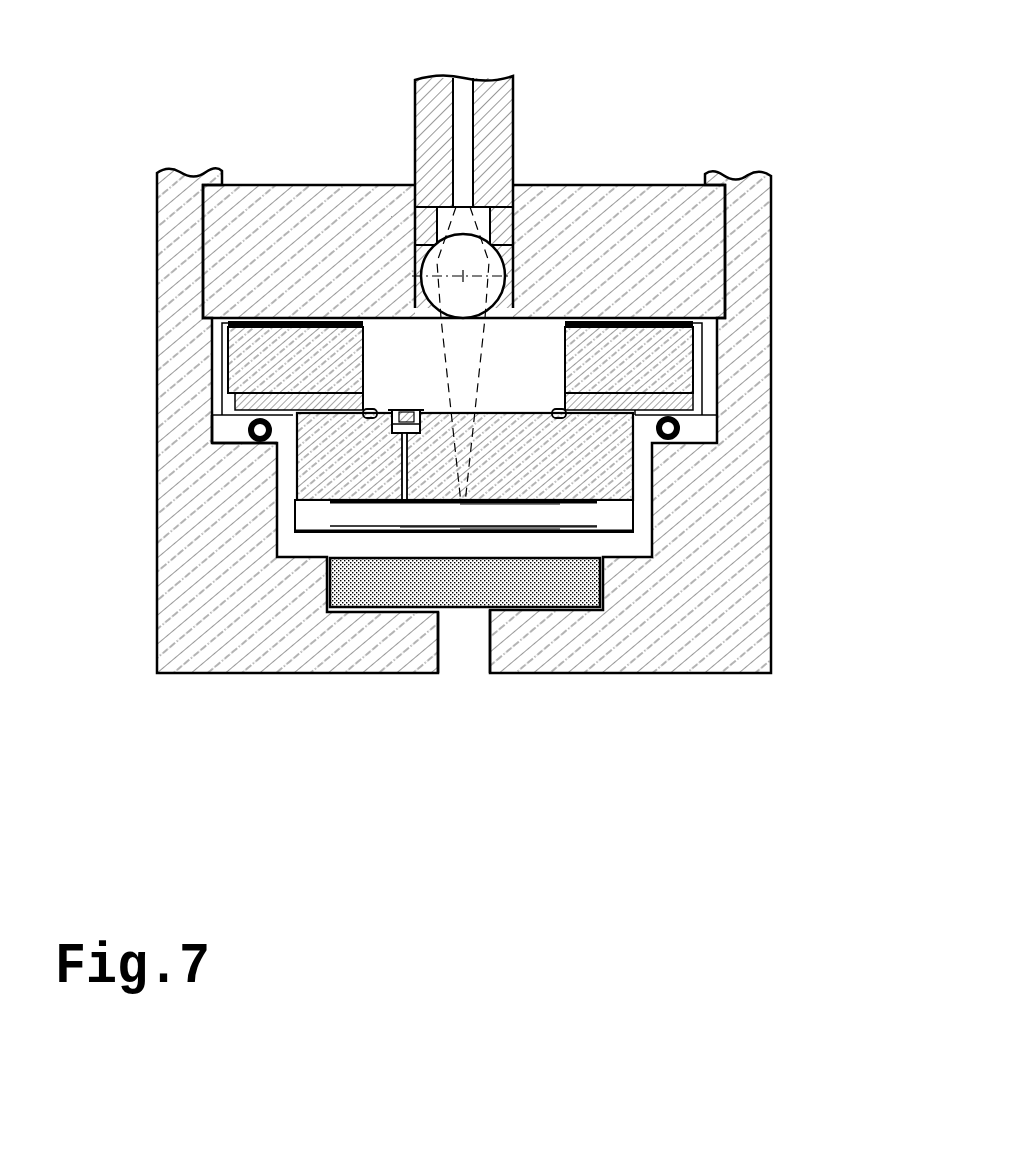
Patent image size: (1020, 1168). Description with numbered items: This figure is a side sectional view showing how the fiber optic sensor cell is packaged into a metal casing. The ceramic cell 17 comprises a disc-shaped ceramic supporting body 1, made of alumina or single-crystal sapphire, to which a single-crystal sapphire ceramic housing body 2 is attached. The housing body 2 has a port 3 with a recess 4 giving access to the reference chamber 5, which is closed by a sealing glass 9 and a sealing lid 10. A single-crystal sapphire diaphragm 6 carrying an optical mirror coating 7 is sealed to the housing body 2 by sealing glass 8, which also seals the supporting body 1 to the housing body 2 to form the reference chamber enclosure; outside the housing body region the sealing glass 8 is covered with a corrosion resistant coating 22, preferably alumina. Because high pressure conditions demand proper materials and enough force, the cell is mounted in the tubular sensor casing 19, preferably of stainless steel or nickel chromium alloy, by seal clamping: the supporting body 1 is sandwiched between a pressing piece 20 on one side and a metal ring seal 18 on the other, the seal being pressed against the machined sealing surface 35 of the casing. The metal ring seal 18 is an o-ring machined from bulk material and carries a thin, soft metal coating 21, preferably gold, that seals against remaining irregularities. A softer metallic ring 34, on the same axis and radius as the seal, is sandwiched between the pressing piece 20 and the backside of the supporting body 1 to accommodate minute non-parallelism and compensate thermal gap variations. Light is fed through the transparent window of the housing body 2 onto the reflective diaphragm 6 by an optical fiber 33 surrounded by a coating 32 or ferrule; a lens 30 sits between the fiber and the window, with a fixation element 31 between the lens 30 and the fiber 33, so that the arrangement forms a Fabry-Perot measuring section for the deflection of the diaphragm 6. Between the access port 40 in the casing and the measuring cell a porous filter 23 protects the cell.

The ceramic supporting body 1 is at (540, 341).
The ceramic housing body 2 is at (346, 518).
The port 3 is at (233, 502).
The recess 4 is at (626, 381).
The reference chamber 5 is at (599, 590).
The diaphragm 6 is at (395, 629).
The optical mirror coating 7 is at (547, 648).
The sealing glass 8 is at (462, 571).
The sealing glass 9 is at (240, 365).
The sealing lid 10 is at (234, 328).
The ceramic cell 17 is at (546, 641).
The metal ring seal 18 is at (365, 448).
The sensor casing 19 is at (516, 383).
The pressing piece 20 is at (464, 205).
The metal coating 21 is at (145, 416).
The corrosion resistant coating 22 is at (757, 471).
The porous filter 23 is at (431, 658).
The lens 30 is at (404, 205).
The fixation element 31 is at (514, 169).
The coating 32 is at (497, 156).
The optical fiber 33 is at (426, 106).
The metallic ring 34 is at (552, 260).
The sealing surface 35 is at (165, 484).
The access port 40 is at (434, 684).